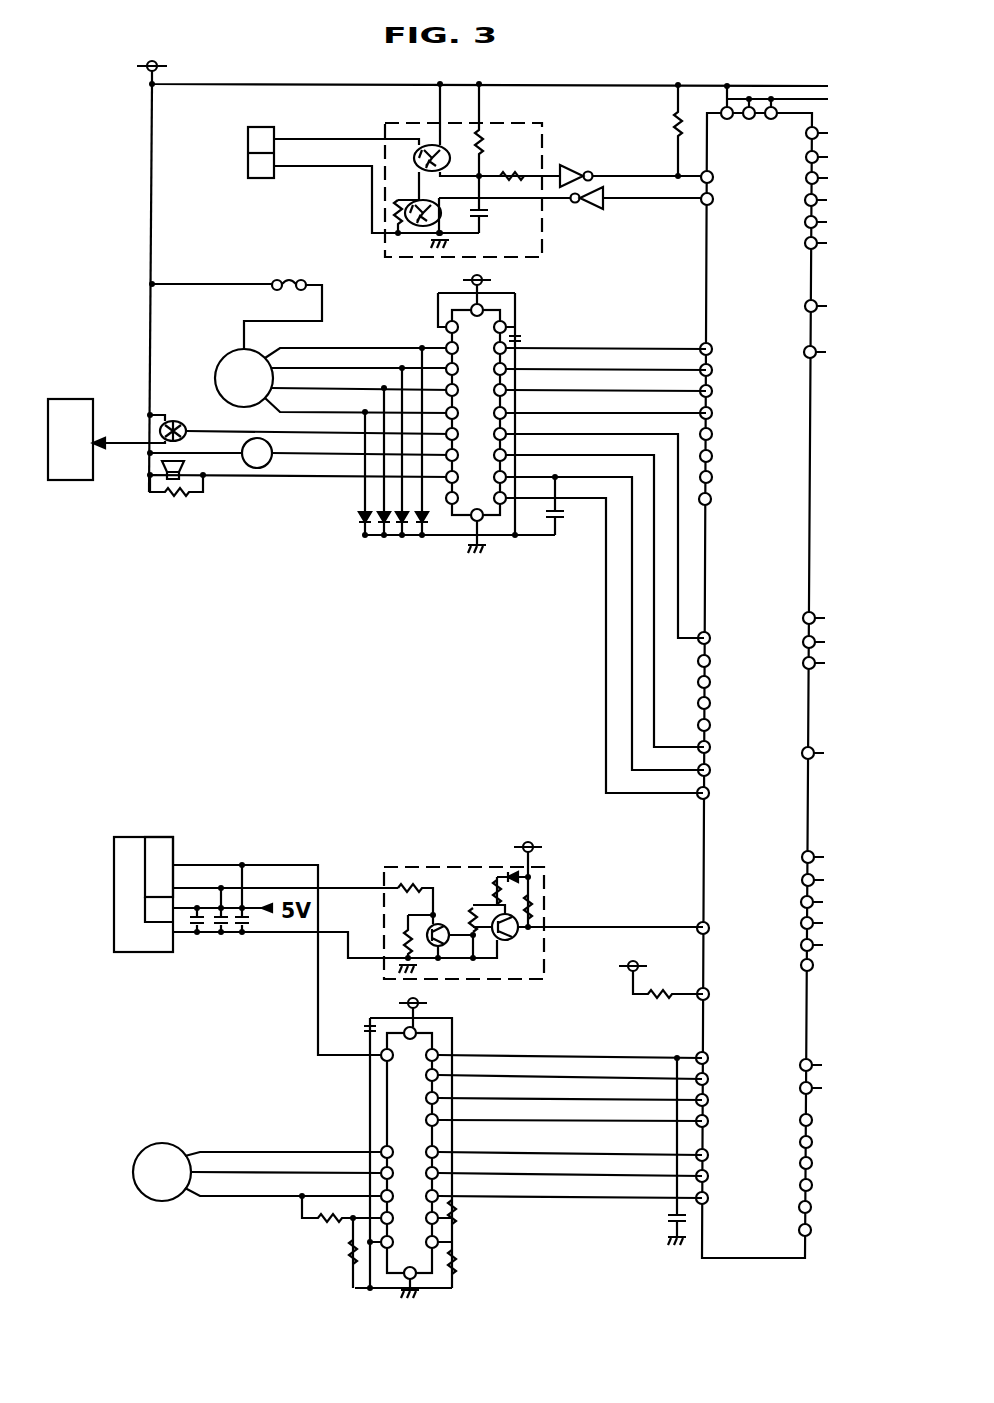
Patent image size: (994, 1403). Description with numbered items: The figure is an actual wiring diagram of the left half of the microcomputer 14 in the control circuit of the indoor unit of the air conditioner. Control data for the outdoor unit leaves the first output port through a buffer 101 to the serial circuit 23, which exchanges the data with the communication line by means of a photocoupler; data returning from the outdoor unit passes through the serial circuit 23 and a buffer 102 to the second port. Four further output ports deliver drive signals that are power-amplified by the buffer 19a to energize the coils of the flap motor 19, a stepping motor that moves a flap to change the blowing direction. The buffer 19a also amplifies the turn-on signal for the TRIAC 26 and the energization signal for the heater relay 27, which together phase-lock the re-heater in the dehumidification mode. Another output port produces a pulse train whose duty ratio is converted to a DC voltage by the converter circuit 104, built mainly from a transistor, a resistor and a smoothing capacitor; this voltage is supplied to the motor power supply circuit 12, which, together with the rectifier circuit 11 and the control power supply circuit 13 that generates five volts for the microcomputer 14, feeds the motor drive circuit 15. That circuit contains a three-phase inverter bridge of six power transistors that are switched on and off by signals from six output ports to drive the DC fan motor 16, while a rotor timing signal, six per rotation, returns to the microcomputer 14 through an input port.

The rectifier circuit 11 is at (130, 845).
The motor power supply circuit 12 is at (160, 850).
The control power supply circuit 13 is at (160, 918).
The microcomputer 14 is at (710, 843).
The motor drive circuit 15 is at (390, 1262).
The DC fan motor 16 is at (157, 1143).
The flap motor 19 is at (228, 358).
The buffer 19a is at (463, 508).
The serial circuit 23 is at (410, 122).
The TRIAC 26 is at (73, 408).
The heater relay 27 is at (246, 469).
The buffer 101 is at (575, 169).
The buffer 102 is at (590, 208).
The converter circuit 104 is at (455, 863).